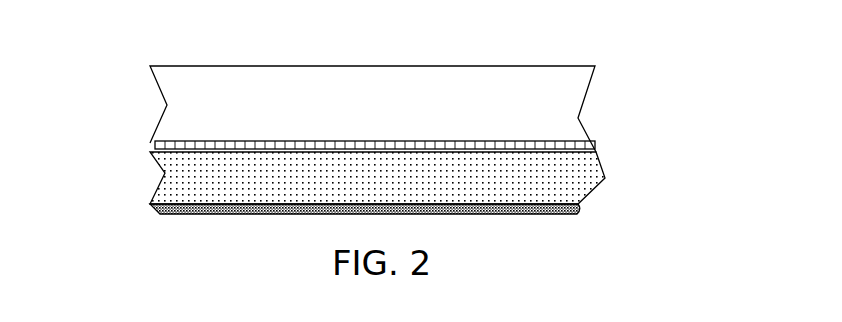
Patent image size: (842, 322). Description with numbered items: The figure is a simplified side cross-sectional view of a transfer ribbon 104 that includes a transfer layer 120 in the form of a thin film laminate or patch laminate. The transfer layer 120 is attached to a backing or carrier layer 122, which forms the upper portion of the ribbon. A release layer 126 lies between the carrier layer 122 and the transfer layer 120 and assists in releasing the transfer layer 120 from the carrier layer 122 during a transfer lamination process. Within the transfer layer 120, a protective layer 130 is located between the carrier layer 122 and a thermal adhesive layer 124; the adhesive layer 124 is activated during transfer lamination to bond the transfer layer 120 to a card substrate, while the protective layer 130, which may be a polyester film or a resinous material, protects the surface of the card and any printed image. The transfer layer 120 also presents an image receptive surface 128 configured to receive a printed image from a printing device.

The transfer ribbon 104 is at (134, 32).
The transfer layer 120 is at (644, 174).
The carrier layer 122 is at (548, 73).
The thermal adhesive layer 124 is at (163, 212).
The release layer 126 is at (347, 148).
The image receptive surface 128 is at (547, 222).
The protective layer 130 is at (170, 185).